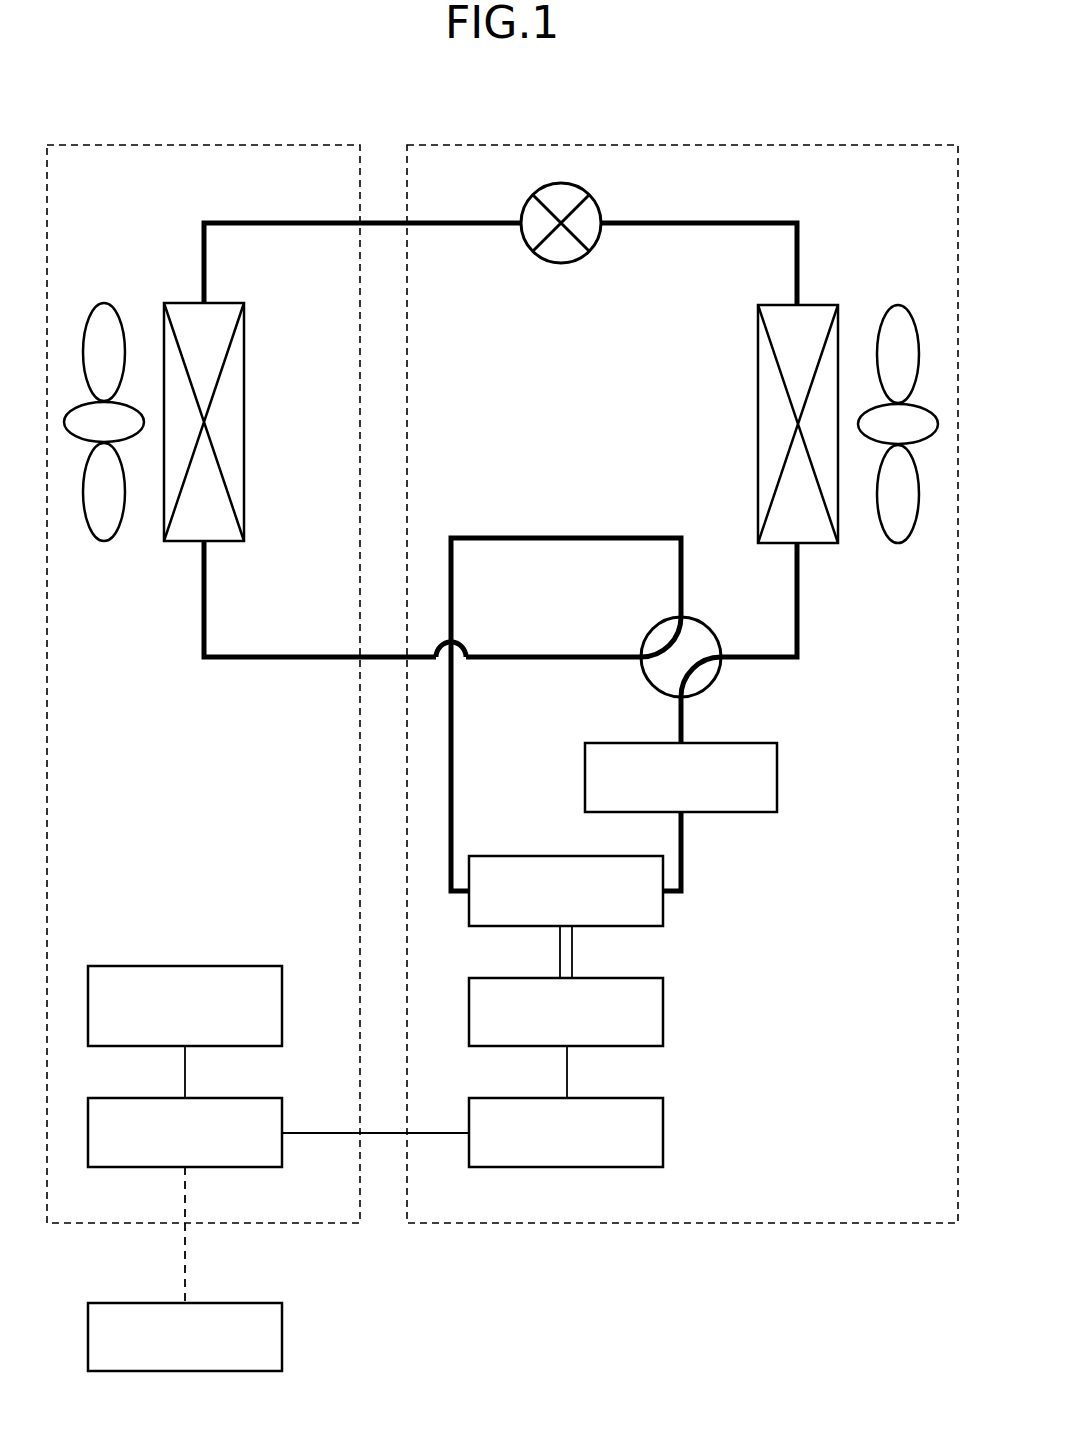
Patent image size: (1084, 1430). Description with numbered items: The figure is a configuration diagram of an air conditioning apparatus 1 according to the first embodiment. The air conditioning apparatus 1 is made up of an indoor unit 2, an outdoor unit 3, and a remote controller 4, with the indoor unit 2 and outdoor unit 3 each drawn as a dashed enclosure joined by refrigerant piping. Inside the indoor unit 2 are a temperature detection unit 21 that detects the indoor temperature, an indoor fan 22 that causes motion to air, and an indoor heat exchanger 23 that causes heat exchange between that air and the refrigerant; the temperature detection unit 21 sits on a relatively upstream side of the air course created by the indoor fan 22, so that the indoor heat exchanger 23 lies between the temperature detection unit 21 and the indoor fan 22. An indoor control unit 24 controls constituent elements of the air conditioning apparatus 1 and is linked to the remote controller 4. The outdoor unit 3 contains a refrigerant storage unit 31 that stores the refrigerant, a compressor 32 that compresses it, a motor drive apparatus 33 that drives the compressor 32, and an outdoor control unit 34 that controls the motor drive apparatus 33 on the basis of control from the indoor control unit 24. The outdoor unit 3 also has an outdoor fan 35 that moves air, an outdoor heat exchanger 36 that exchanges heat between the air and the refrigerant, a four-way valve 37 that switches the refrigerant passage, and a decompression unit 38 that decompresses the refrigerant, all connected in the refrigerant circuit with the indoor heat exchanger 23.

The air conditioning apparatus 1 is at (772, 88).
The indoor unit 2 is at (155, 145).
The outdoor unit 3 is at (514, 145).
The remote controller 4 is at (218, 1304).
The temperature detection unit 21 is at (218, 967).
The indoor fan 22 is at (104, 304).
The indoor heat exchanger 23 is at (222, 304).
The indoor control unit 24 is at (218, 1099).
The refrigerant storage unit 31 is at (725, 744).
The compressor 32 is at (605, 857).
The motor drive apparatus 33 is at (605, 979).
The outdoor control unit 34 is at (605, 1099).
The outdoor fan 35 is at (898, 305).
The outdoor heat exchanger 36 is at (820, 305).
The four-way valve 37 is at (712, 628).
The decompression unit 38 is at (560, 264).